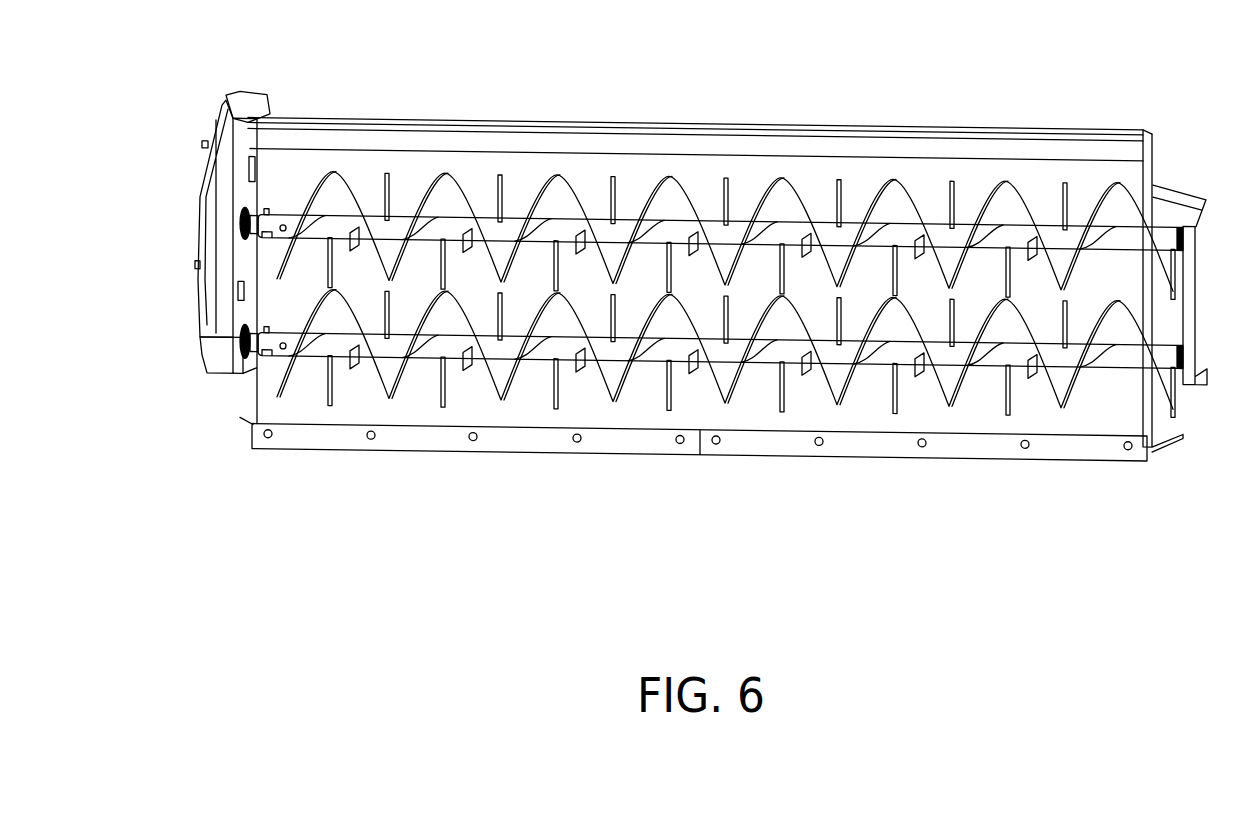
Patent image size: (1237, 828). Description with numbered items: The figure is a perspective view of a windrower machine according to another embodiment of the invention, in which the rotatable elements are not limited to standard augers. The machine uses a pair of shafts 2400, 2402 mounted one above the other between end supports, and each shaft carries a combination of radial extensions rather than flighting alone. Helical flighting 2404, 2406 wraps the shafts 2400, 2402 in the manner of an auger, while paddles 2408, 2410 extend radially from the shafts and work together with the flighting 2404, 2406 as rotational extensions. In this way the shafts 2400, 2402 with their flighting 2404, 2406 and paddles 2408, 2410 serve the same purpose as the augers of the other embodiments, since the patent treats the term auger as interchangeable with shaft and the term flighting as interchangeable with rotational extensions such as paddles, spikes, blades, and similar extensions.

The shaft 2400 is at (433, 347).
The shaft 2402 is at (379, 200).
The flighting 2404 is at (506, 398).
The flighting 2406 is at (458, 192).
The paddles 2408 is at (672, 402).
The paddles 2410 is at (723, 178).